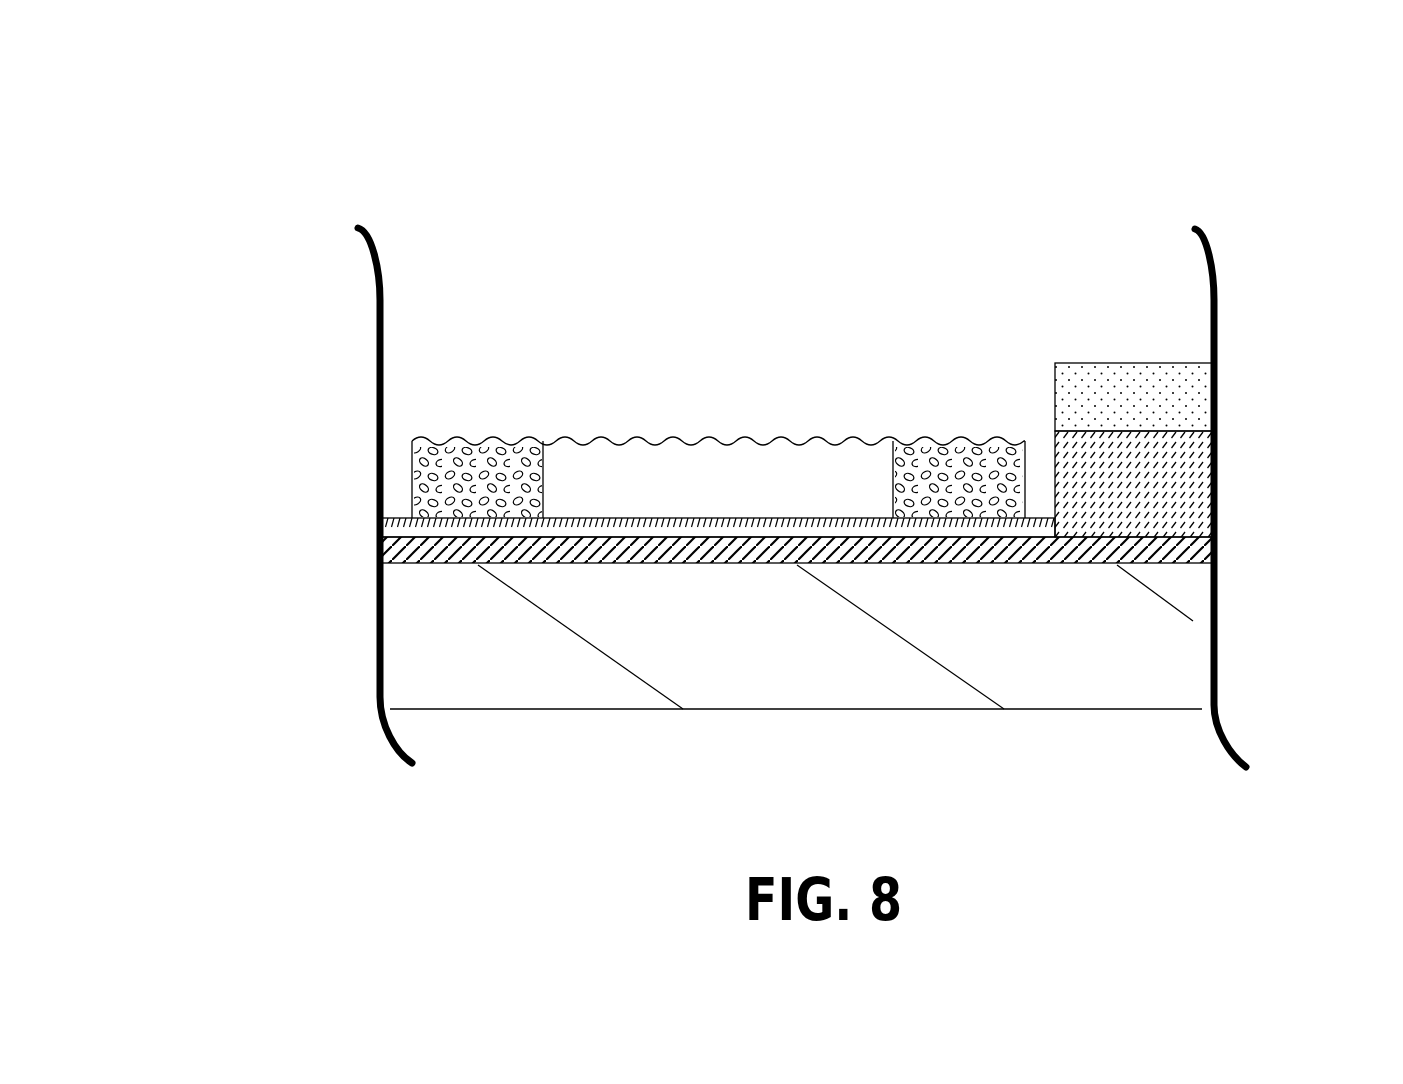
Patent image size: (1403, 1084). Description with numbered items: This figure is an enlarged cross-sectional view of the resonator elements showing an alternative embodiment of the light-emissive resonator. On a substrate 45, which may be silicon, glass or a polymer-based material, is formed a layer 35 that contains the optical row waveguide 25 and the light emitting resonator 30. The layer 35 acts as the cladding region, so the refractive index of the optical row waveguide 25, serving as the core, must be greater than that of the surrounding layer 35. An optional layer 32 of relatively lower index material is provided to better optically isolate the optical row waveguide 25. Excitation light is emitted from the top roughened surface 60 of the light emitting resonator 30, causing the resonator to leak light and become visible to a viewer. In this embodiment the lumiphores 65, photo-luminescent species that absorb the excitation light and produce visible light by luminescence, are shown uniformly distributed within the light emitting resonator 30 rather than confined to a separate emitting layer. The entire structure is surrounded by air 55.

The air 55 is at (411, 292).
The top roughened surface 60 is at (510, 437).
The light emitting resonator 30 is at (980, 432).
The optical row waveguide 25 is at (1188, 417).
The optional layer 32 is at (382, 547).
The lumiphores 65 is at (482, 493).
The substrate 45 is at (730, 665).
The layer 35 is at (1127, 470).